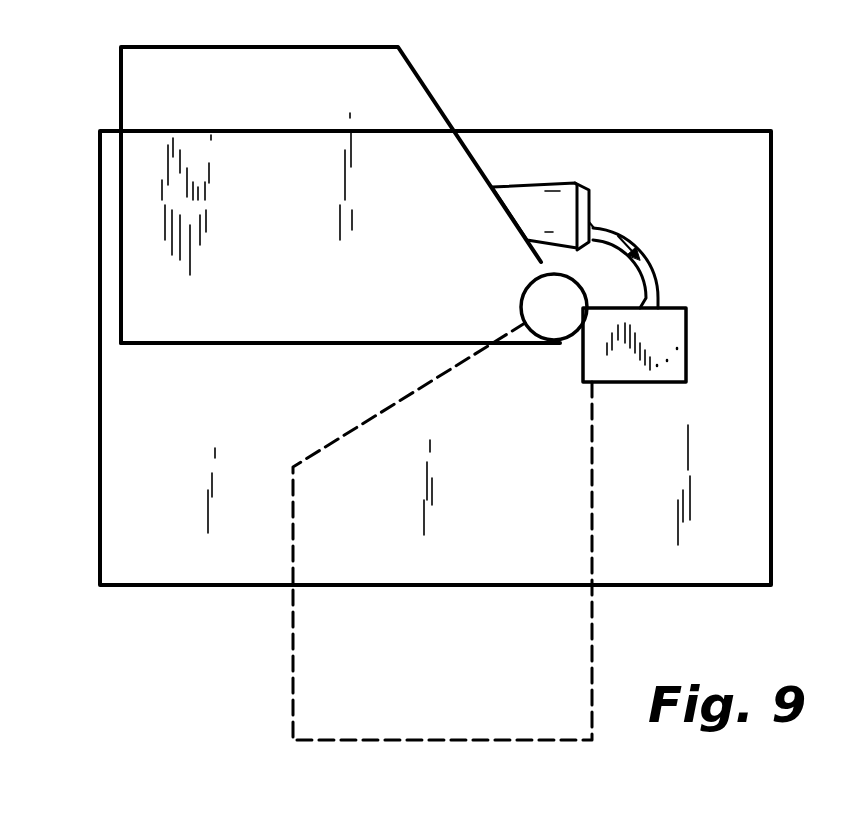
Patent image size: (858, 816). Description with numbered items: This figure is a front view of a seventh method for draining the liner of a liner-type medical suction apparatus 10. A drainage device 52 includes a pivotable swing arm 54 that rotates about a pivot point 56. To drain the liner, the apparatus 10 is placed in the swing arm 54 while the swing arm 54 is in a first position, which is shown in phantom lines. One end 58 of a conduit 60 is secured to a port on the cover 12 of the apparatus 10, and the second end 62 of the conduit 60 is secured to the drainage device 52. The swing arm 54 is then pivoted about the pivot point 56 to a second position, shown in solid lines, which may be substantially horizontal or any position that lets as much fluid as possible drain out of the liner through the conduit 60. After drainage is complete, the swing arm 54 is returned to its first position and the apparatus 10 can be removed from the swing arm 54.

The liner-type medical suction apparatus 10 is at (512, 201).
The cover 12 is at (590, 188).
The drainage device 52 is at (742, 482).
The pivotable swing arm 54 is at (282, 50).
The pivot point 56 is at (557, 307).
The one end of the conduit 58 is at (594, 222).
The conduit 60 is at (635, 243).
The second end of the conduit 62 is at (660, 297).